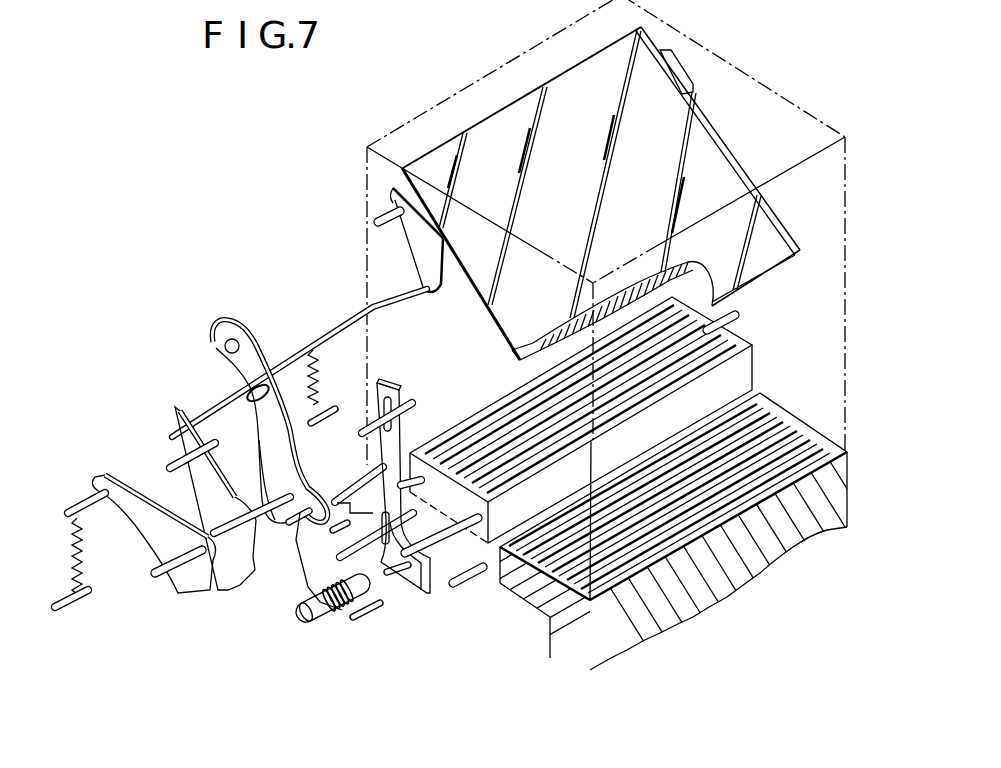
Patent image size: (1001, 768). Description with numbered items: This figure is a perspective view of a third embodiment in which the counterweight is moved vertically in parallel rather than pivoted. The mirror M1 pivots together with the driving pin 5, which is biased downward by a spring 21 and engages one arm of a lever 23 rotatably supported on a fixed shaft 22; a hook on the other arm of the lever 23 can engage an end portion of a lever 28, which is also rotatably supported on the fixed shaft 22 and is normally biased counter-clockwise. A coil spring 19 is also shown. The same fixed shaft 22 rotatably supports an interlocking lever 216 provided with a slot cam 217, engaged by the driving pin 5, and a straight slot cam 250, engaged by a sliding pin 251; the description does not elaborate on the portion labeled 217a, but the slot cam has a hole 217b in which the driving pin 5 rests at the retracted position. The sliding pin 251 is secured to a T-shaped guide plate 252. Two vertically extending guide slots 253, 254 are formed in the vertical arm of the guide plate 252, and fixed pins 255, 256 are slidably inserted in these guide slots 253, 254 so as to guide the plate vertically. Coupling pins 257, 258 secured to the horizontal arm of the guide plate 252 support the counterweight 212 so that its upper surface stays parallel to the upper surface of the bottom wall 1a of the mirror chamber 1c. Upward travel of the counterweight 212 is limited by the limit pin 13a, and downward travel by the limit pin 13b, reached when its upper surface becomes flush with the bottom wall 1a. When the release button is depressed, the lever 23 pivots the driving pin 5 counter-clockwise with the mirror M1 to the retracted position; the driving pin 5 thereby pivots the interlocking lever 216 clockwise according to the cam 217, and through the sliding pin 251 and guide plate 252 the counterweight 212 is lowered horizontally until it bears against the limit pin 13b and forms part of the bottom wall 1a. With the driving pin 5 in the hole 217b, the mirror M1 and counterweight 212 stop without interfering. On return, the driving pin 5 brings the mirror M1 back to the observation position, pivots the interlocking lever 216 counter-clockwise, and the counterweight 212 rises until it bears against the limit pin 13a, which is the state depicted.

The bottom wall 1a is at (817, 445).
The mirror chamber 1c is at (848, 188).
The mirror M1 is at (712, 160).
The driving pin 5 is at (358, 315).
The limit pin 13a is at (738, 315).
The limit pin 13b is at (473, 575).
The coil spring 19 is at (343, 614).
The spring 21 is at (320, 388).
The fixed shaft 22 is at (157, 578).
The lever 23 is at (218, 493).
The lever 28 is at (125, 510).
The counterweight 212 is at (738, 370).
The interlocking lever 216 is at (270, 450).
The slot cam 217 is at (226, 411).
The slot 217a is at (246, 393).
The hole 217b is at (223, 342).
The straight slot cam 250 is at (288, 507).
The sliding pin 251 is at (356, 486).
The T-shaped guide plate 252 is at (404, 447).
The guide slot 253 is at (385, 383).
The guide slot 254 is at (377, 606).
The fixed pin 255 is at (405, 410).
The fixed pin 256 is at (298, 596).
The coupling pin 257 is at (404, 470).
The coupling pin 258 is at (445, 538).